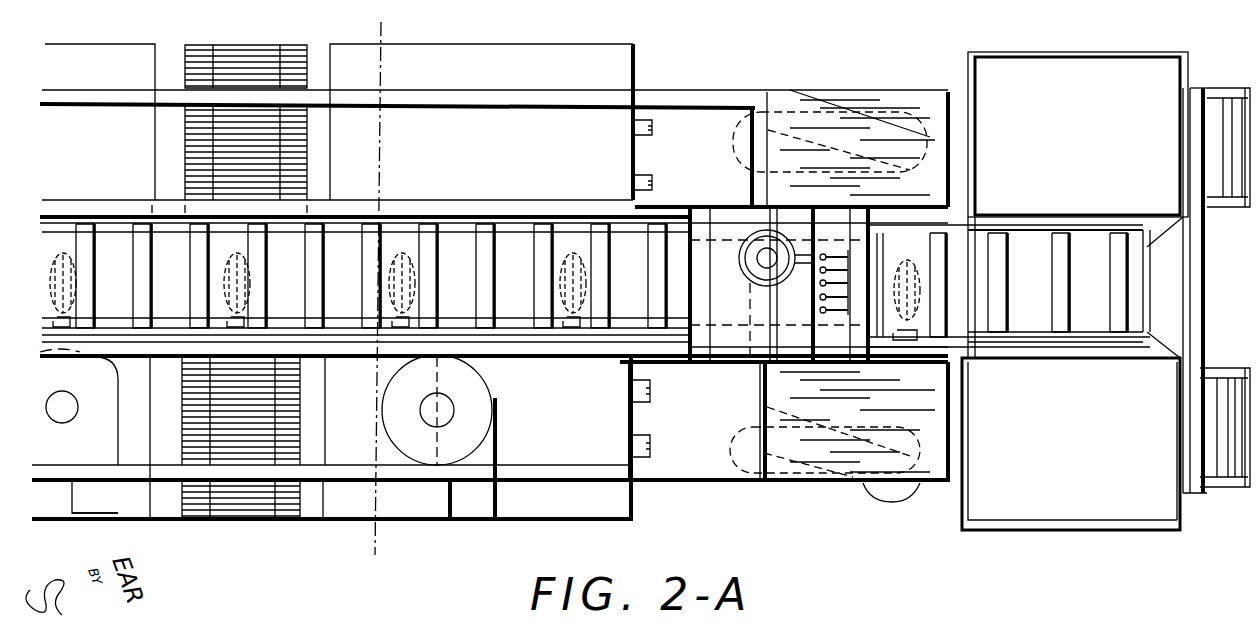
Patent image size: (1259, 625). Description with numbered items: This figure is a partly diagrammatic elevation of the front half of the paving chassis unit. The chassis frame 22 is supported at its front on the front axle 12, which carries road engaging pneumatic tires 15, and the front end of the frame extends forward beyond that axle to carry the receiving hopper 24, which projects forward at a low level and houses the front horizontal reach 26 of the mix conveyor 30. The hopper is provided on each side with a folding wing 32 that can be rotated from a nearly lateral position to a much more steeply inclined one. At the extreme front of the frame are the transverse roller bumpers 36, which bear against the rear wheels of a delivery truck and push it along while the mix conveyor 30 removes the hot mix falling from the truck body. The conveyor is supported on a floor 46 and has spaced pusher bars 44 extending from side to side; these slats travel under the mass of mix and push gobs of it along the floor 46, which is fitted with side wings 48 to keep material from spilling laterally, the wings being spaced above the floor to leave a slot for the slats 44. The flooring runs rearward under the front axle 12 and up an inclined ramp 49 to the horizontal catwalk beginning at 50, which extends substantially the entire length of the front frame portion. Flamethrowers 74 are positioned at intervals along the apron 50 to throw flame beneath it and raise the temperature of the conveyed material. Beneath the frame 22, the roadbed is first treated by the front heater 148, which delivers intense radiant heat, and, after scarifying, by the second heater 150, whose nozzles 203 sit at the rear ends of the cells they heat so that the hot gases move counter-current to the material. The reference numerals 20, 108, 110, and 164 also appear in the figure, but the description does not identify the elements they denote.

The front axle 12 is at (370, 34).
The road engaging pneumatic tires 15 is at (860, 463).
The transfer mechanism 20 is at (782, 245).
The chassis frame 22 is at (790, 90).
The receiving hopper 24 is at (1160, 290).
The front horizontal reach of mix conveyor 26 is at (1093, 303).
The mix conveyor 30 is at (413, 240).
The folding wing 32 is at (1010, 78).
The transverse roller bumpers 36 is at (1230, 137).
The pusher bars 44 is at (138, 255).
The floor 46 is at (510, 262).
The side wings 48 is at (1003, 233).
The inclined ramp 49 is at (670, 337).
The horizontal catwalk 50 is at (290, 295).
The flamethrowers 74 is at (416, 298).
The pin 108 is at (832, 253).
The pin carrier plate 110 is at (857, 253).
The front heater 148 is at (427, 512).
The second heater 150 is at (132, 505).
The frame plate 164 is at (752, 187).
The nozzles 203 is at (653, 128).